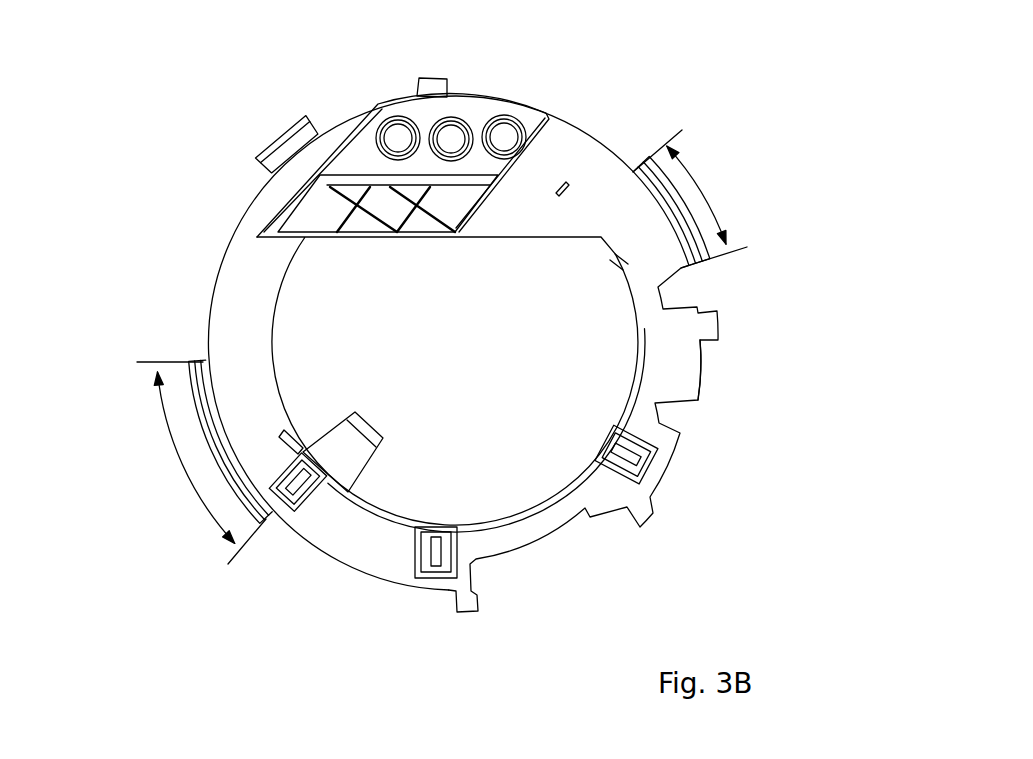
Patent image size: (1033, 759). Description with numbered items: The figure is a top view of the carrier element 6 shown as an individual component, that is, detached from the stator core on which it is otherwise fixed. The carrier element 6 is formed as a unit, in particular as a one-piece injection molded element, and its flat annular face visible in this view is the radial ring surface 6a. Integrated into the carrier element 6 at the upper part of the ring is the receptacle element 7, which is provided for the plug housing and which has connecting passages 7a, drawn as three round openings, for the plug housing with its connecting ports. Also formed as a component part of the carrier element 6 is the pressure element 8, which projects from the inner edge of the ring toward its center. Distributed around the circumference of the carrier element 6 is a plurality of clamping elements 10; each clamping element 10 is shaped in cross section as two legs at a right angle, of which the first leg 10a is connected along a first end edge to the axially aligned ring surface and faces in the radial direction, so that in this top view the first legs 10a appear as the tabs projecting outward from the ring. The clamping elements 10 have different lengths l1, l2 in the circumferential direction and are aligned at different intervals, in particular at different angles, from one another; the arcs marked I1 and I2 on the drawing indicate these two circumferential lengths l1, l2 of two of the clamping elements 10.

The carrier element 6 is at (716, 88).
The radial ring surface 6a is at (665, 375).
The receptacle element 7 is at (370, 84).
The connecting passages 7a is at (498, 133).
The pressure element 8 is at (350, 455).
The clamping element 10 is at (450, 339).
The first leg 10a is at (422, 82).
The angular range I1 is at (201, 463).
The angular range I2 is at (690, 197).
The length of clamping element l1 is at (201, 463).
The length of clamping element l2 is at (690, 197).